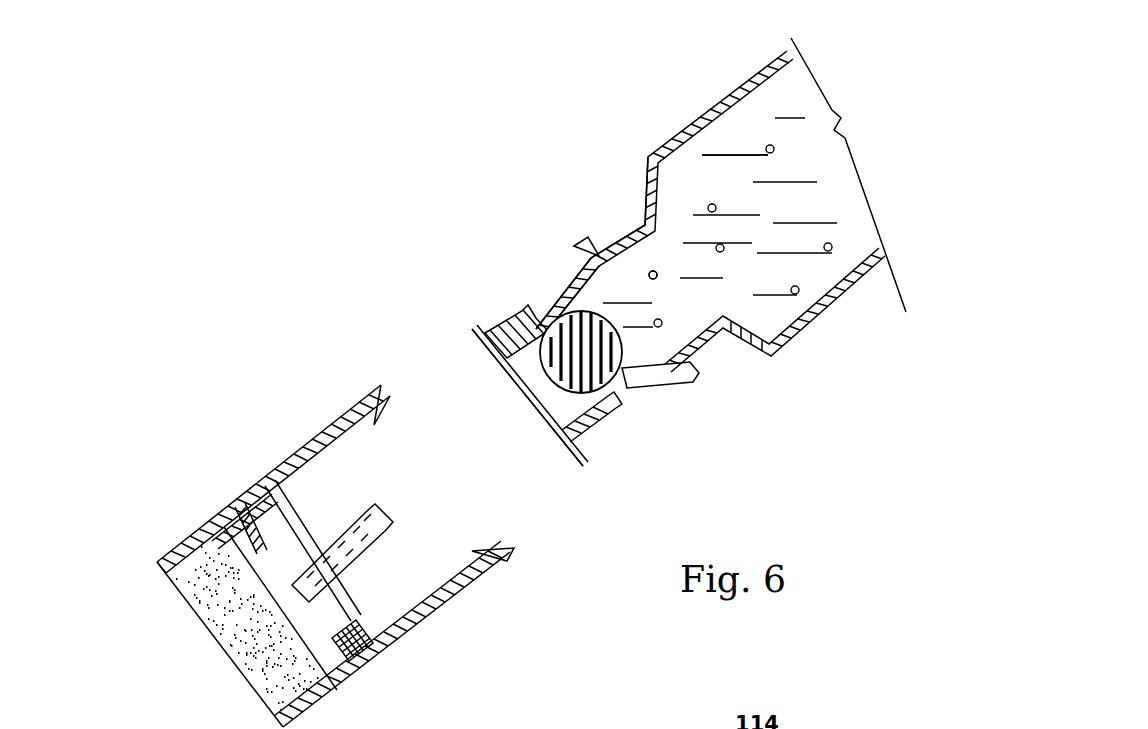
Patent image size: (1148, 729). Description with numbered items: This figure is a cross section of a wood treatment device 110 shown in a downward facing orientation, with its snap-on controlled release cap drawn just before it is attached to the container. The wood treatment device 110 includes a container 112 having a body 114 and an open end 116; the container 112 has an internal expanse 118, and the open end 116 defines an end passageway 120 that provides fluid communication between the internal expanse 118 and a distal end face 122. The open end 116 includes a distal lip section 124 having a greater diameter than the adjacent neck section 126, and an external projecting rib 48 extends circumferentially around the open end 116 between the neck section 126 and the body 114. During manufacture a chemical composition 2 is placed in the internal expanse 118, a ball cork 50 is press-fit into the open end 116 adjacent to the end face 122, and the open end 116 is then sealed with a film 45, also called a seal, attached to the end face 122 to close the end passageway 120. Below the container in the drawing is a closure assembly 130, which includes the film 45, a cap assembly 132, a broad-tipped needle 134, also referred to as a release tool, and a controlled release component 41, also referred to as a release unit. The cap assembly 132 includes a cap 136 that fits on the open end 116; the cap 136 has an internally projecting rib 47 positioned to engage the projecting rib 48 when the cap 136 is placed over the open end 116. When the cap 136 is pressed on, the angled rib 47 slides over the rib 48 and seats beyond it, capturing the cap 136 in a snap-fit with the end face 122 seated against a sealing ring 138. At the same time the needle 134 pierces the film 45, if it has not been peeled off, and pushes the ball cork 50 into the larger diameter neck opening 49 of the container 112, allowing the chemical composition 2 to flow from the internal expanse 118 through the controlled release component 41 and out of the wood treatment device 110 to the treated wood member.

The chemical composition 2 is at (750, 123).
The controlled release component 41 is at (193, 610).
The film 45 is at (505, 376).
The internally projecting rib 47 is at (493, 543).
The projecting rib 48 is at (587, 243).
The neck opening 49 is at (680, 343).
The ball cork 50 is at (622, 388).
The wood treatment device 110 is at (288, 286).
The container 112 is at (660, 147).
The body 114 is at (760, 73).
The open end 116 is at (467, 203).
The internal expanse 118 is at (817, 200).
The end passageway 120 is at (647, 263).
The distal end face 122 is at (570, 447).
The distal lip section 124 is at (503, 323).
The neck section 126 is at (550, 307).
The closure assembly 130 is at (143, 523).
The cap assembly 132 is at (293, 437).
The broad-tipped needle 134 is at (363, 553).
The cap 136 is at (247, 490).
The sealing ring 138 is at (330, 617).